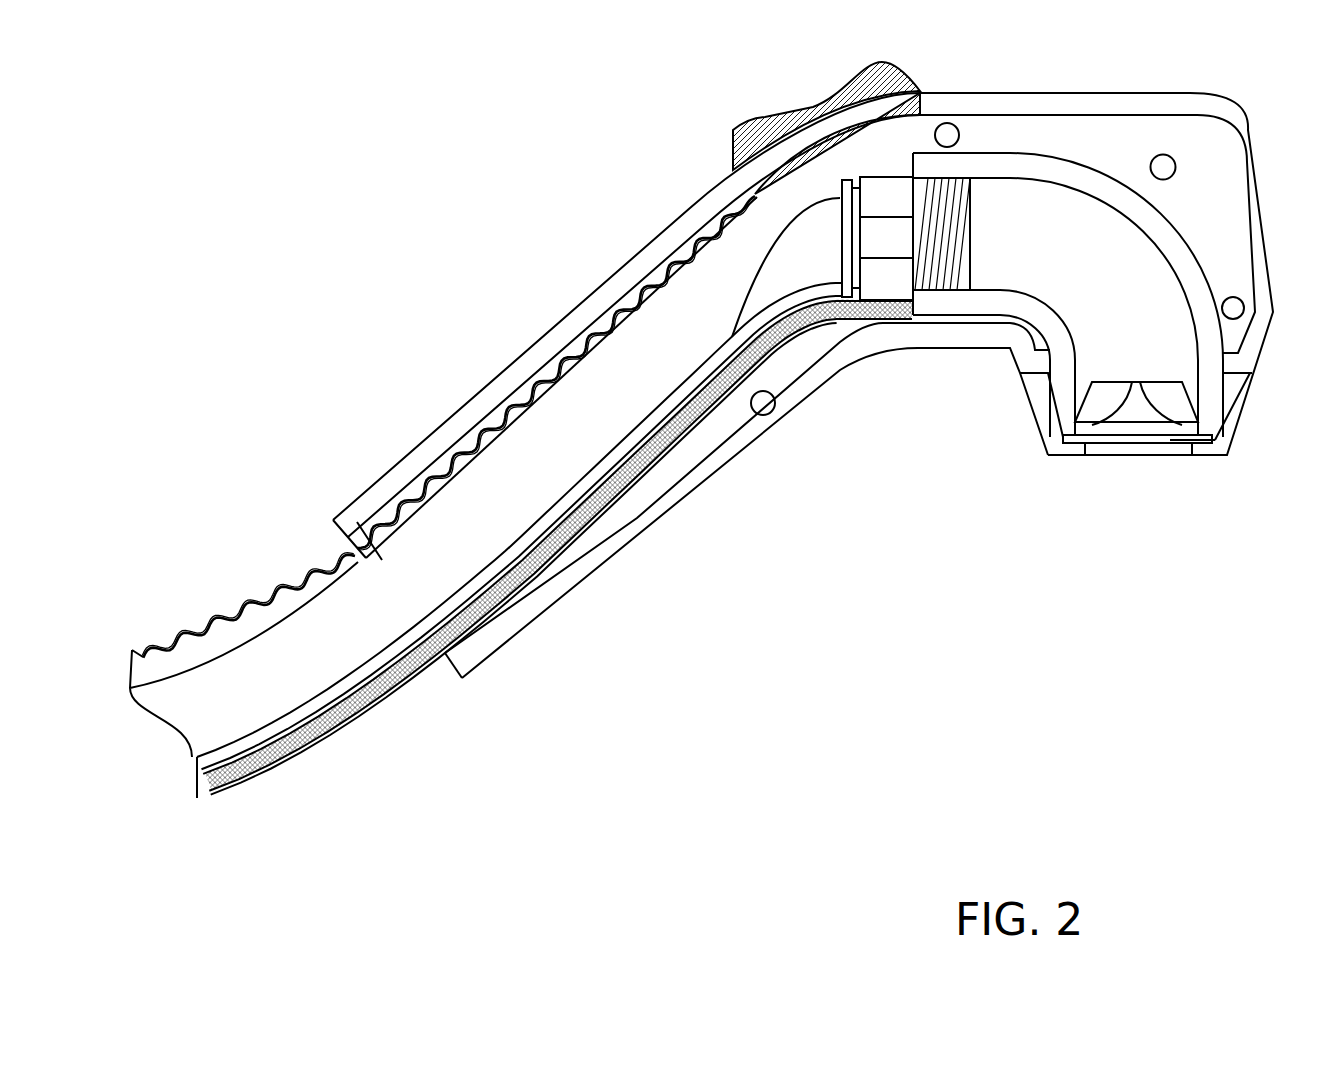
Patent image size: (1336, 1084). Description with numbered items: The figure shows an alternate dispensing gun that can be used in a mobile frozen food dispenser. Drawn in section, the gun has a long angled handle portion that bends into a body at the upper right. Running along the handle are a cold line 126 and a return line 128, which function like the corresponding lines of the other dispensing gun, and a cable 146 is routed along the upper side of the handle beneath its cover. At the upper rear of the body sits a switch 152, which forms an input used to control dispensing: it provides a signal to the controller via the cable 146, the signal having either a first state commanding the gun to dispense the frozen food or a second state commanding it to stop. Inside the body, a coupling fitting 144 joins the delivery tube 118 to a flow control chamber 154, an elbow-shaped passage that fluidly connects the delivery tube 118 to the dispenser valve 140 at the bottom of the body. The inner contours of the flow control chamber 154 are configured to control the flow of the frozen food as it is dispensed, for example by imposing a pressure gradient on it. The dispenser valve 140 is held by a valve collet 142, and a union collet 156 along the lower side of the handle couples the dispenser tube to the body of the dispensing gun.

The delivery tube 118 is at (612, 380).
The cold line 126 is at (292, 728).
The return line 128 is at (230, 781).
The dispenser valve 140 is at (1126, 447).
The valve collet 142 is at (1040, 417).
The coupling fitting 144 is at (838, 217).
The cable 146 is at (468, 432).
The switch 152 is at (750, 118).
The flow control chamber 154 is at (1052, 150).
The union collet 156 is at (422, 687).